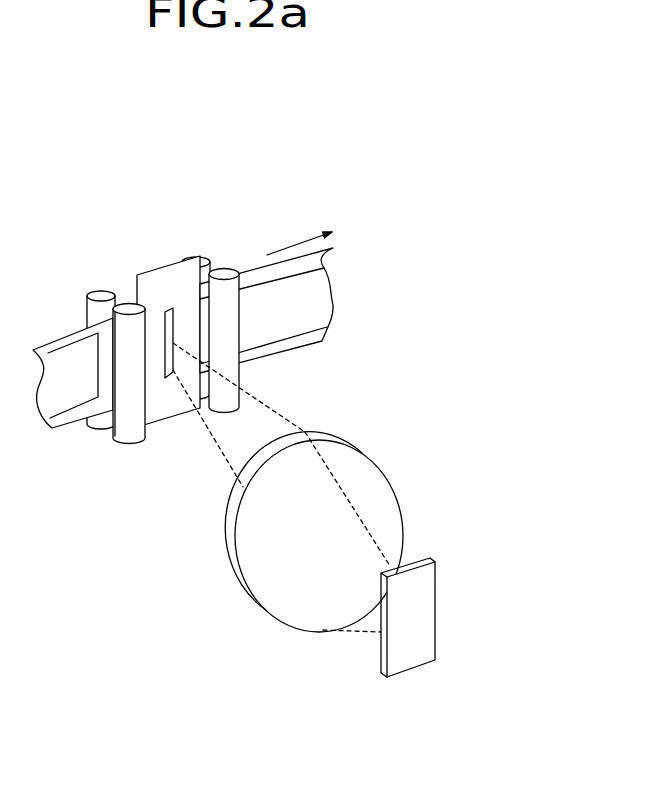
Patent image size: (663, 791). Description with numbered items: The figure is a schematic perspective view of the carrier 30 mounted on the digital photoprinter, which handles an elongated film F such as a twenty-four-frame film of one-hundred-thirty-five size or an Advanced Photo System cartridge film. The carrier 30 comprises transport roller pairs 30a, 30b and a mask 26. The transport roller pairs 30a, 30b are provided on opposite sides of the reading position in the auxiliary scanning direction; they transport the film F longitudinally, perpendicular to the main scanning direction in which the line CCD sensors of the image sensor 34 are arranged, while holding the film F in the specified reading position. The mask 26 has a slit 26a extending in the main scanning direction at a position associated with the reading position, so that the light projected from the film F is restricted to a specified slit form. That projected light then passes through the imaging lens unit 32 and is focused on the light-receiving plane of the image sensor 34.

The carrier 30 is at (107, 258).
The transport roller pair 30a is at (127, 428).
The transport roller pair 30b is at (225, 344).
The mask 26 is at (165, 403).
The slit 26a is at (168, 310).
The film F is at (302, 298).
The imaging lens unit 32 is at (360, 472).
The image sensor 34 is at (418, 610).